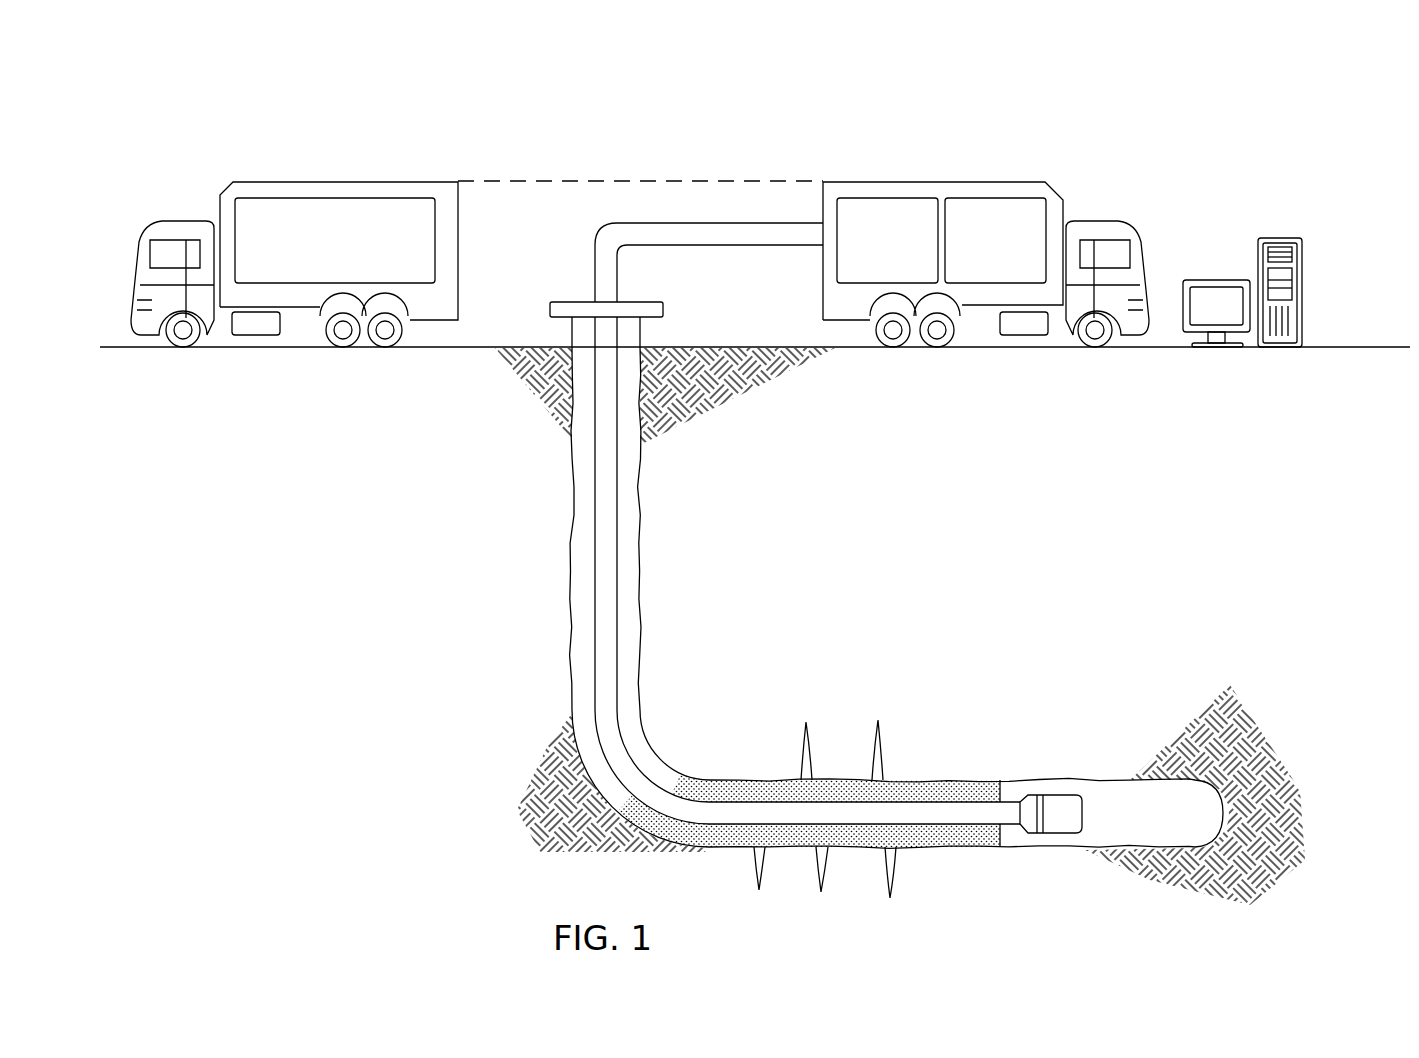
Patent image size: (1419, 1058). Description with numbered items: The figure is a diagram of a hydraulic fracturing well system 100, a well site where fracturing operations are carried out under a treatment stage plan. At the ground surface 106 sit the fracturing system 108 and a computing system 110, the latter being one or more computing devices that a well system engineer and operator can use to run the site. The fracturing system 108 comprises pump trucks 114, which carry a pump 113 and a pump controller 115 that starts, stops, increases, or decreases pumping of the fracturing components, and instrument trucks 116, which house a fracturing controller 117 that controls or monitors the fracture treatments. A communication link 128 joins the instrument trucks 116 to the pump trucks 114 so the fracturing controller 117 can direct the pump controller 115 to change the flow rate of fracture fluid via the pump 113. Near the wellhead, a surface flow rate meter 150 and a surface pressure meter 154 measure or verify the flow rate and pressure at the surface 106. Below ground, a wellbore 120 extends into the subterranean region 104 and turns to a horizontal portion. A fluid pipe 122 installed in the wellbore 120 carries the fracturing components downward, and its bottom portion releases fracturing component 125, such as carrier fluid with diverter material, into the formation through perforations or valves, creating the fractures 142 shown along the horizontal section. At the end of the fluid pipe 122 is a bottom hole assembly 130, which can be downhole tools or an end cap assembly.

The hydraulic fracturing well system 100 is at (202, 98).
The subterranean region 104 is at (1009, 656).
The ground surface 106 is at (1362, 346).
The fracturing system 108 is at (170, 190).
The computing system 110 is at (1322, 242).
The pump 113 is at (906, 258).
The pump trucks 114 is at (956, 181).
The pump controller 115 is at (1014, 258).
The instrument trucks 116 is at (320, 181).
The fracturing controller 117 is at (354, 258).
The wellbore 120 is at (572, 518).
The fluid pipe 122 is at (595, 592).
The fracturing component 125 is at (926, 786).
The communication link 128 is at (626, 181).
The bottom hole assembly 130 is at (1034, 791).
The fractures 142 is at (895, 706).
The surface flow rate meter 150 is at (582, 326).
The surface pressure meter 154 is at (630, 326).